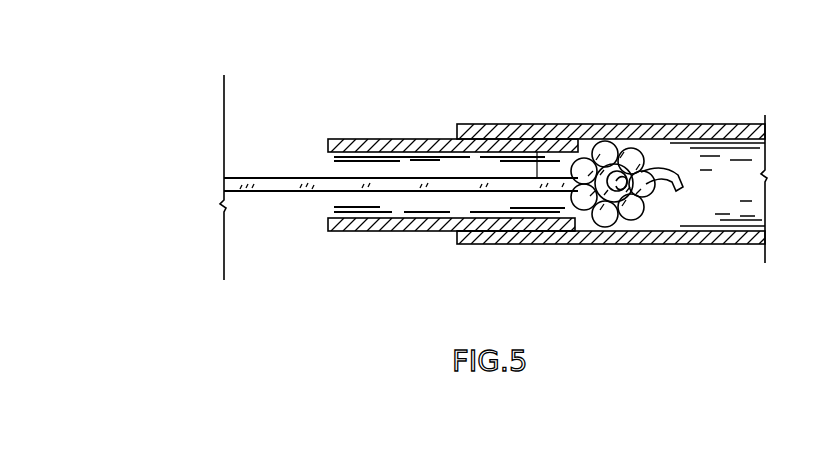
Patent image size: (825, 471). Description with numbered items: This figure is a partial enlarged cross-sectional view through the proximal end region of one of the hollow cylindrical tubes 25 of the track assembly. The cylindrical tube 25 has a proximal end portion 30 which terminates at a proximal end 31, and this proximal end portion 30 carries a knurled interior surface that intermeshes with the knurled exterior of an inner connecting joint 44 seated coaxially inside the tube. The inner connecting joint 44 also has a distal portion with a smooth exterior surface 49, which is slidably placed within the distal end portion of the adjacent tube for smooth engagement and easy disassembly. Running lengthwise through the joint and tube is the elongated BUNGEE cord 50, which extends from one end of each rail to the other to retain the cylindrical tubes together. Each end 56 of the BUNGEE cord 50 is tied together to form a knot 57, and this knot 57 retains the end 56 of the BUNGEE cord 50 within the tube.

The hollow cylindrical tube 25 is at (687, 125).
The proximal end portion 30 is at (534, 245).
The proximal end 31 is at (457, 233).
The inner connecting joint 44 is at (392, 232).
The smooth exterior surface 49 is at (360, 139).
The BUNGEE cord 50 is at (255, 191).
The end of BUNGEE cord 56 is at (538, 152).
The knot 57 is at (645, 193).